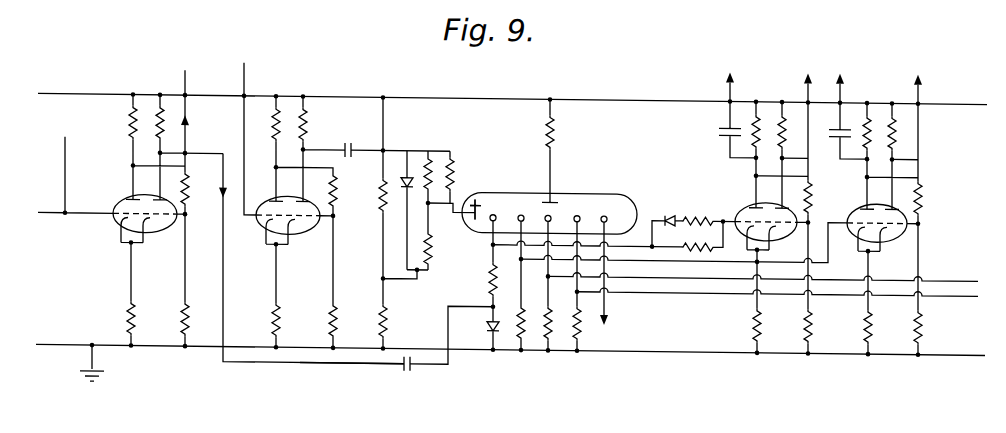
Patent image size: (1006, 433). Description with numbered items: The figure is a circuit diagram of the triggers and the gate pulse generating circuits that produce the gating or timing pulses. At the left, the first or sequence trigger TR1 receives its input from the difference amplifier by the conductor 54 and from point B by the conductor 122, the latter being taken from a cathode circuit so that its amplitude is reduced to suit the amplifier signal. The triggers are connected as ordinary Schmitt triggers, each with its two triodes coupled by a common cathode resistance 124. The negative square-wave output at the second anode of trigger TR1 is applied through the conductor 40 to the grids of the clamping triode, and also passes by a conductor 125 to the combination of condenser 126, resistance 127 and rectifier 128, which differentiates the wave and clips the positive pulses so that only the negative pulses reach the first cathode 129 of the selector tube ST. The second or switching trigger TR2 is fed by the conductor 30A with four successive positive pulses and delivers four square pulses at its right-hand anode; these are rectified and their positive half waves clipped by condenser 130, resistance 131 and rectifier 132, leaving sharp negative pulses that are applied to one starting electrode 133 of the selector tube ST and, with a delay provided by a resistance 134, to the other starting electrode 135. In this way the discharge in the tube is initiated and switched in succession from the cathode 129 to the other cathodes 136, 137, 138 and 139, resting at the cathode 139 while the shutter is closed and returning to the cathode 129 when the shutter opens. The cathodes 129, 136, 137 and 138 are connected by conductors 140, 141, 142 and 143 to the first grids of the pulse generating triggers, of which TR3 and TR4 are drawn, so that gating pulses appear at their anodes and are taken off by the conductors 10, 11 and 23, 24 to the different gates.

The conductor 10 is at (731, 86).
The conductor 11 is at (841, 77).
The conductor 23 is at (807, 75).
The conductor 24 is at (917, 76).
The conductor 30A is at (244, 72).
The conductor 40 is at (185, 72).
The conductor 54 is at (66, 166).
The conductor 122 is at (48, 227).
The common cathode resistance 124 is at (129, 303).
The conductor 125 is at (388, 362).
The condenser 126 is at (411, 363).
The resistance 127 is at (488, 261).
The rectifier 128 is at (490, 323).
The first cathode 129 is at (524, 208).
The condenser 130 is at (349, 139).
The resistance 131 is at (428, 150).
The rectifier 132 is at (404, 179).
The starting electrode 133 is at (476, 198).
The resistance 134 is at (452, 150).
The starting electrode 135 is at (496, 208).
The cathode 136 is at (552, 208).
The cathode 137 is at (580, 208).
The cathode 138 is at (608, 208).
The cathode 139 is at (628, 236).
The conductor 140 is at (677, 210).
The conductor 141 is at (671, 254).
The conductor 142 is at (947, 272).
The conductor 143 is at (972, 288).
The sequence trigger TR1 is at (115, 222).
The switching trigger TR2 is at (256, 223).
The pulse generating trigger TR3 is at (739, 199).
The pulse generating trigger TR4 is at (848, 212).
The selector tube ST is at (472, 228).